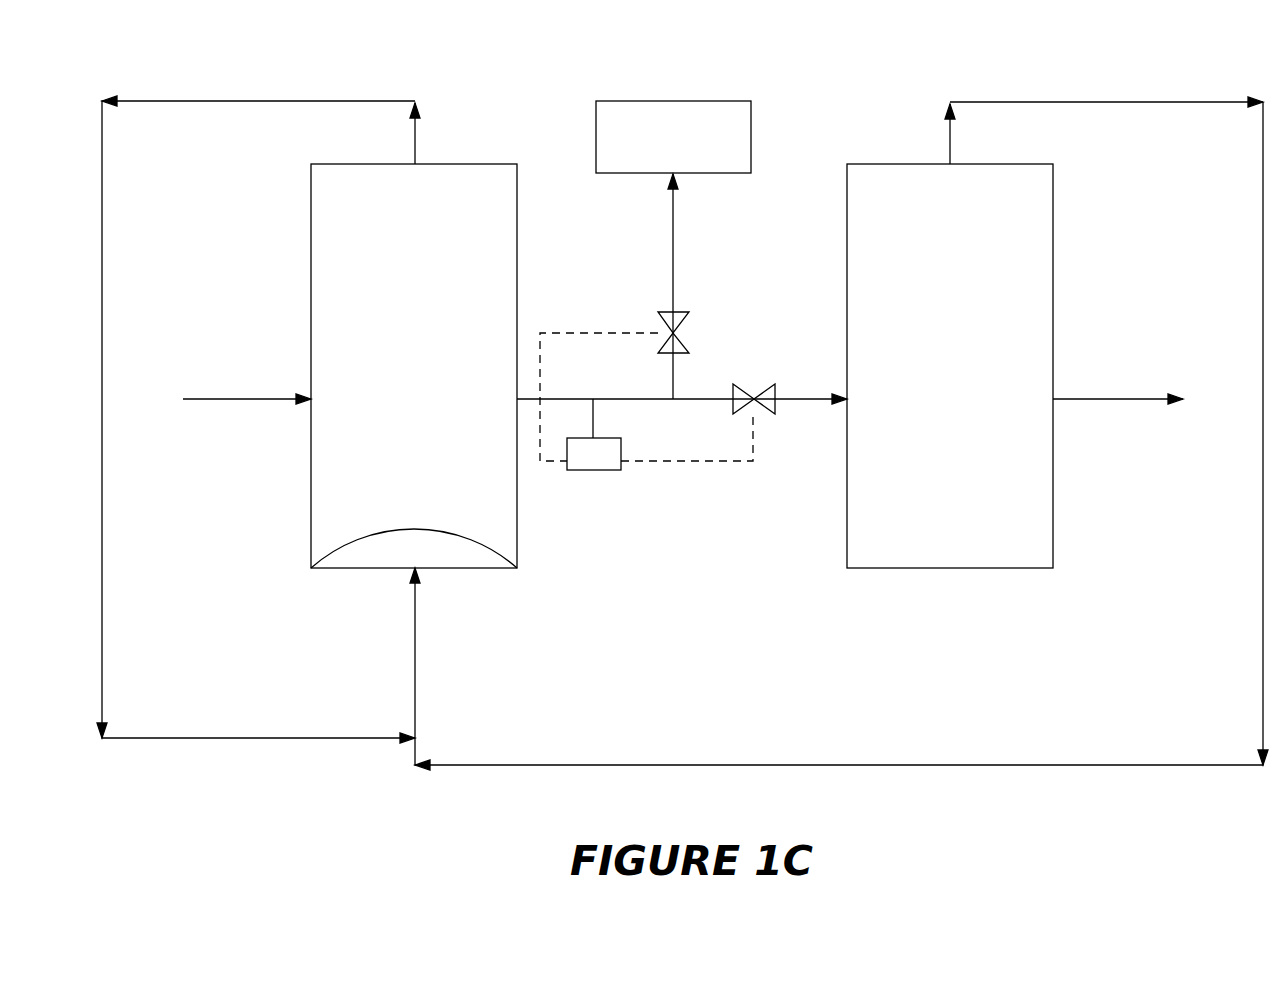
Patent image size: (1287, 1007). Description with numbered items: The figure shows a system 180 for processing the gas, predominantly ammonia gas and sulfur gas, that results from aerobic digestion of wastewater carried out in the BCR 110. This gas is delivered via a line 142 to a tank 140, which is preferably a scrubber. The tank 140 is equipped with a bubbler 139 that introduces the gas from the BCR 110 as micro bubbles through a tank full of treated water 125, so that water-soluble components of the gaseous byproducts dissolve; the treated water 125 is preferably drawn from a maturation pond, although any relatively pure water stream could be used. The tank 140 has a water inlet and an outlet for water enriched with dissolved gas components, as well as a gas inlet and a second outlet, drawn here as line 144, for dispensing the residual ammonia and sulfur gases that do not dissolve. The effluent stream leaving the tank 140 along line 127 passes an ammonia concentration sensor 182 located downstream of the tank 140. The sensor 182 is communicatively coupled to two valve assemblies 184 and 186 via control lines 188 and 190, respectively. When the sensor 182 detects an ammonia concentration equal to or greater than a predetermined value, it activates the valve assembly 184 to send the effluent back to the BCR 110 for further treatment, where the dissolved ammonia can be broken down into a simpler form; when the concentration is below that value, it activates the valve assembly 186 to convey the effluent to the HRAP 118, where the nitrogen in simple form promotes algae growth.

The BCR 110 is at (1053, 178).
The HRAP 118 is at (686, 100).
The treated water 125 is at (218, 396).
The process line from stripper to BCR #1 127 is at (568, 399).
The bubbler 139 is at (484, 561).
The tank 140 is at (311, 190).
The line 142 is at (415, 643).
The residual ammonia and sulfur gas recycle line 144 is at (186, 100).
The system 180 is at (335, 805).
The ammonia concentration sensor 182 is at (595, 472).
The valve assembly 184 is at (770, 383).
The valve assembly 186 is at (665, 312).
The control line 188 is at (714, 462).
The control line 190 is at (540, 330).